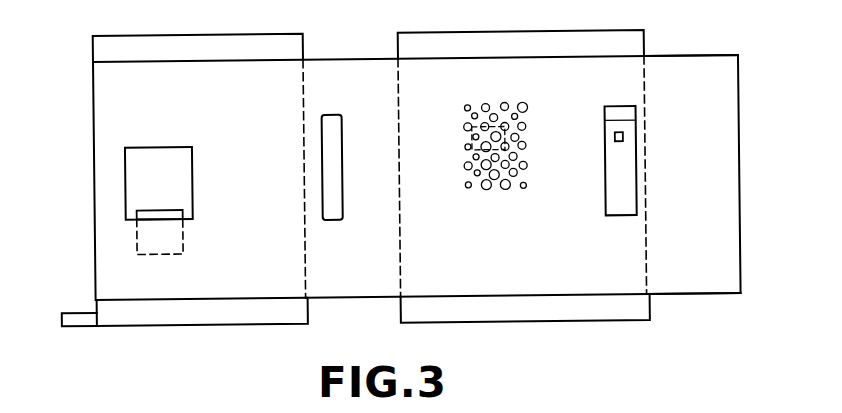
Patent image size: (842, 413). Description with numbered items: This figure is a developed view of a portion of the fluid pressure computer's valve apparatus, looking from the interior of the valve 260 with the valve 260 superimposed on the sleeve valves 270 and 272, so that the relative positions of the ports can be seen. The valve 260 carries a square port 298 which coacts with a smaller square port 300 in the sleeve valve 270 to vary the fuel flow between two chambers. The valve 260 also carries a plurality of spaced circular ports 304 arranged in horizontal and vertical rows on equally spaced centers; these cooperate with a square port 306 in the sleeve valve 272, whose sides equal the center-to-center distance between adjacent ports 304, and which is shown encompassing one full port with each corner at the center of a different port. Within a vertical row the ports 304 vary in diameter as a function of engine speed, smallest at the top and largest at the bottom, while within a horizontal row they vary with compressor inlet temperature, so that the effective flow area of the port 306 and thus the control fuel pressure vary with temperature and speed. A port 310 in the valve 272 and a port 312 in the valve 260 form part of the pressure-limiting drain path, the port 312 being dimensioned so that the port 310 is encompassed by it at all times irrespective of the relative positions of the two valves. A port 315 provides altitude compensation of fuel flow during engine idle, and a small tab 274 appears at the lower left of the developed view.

The valve 260 is at (727, 80).
The sleeve valve 270 is at (290, 50).
The sleeve valve 272 is at (632, 48).
The tab 274 is at (68, 313).
The square port 298 is at (191, 173).
The square port 300 is at (181, 238).
The circular ports 304 is at (605, 151).
The square port 306 is at (502, 127).
The port 310 is at (622, 143).
The port 312 is at (629, 126).
The port 315 is at (331, 171).